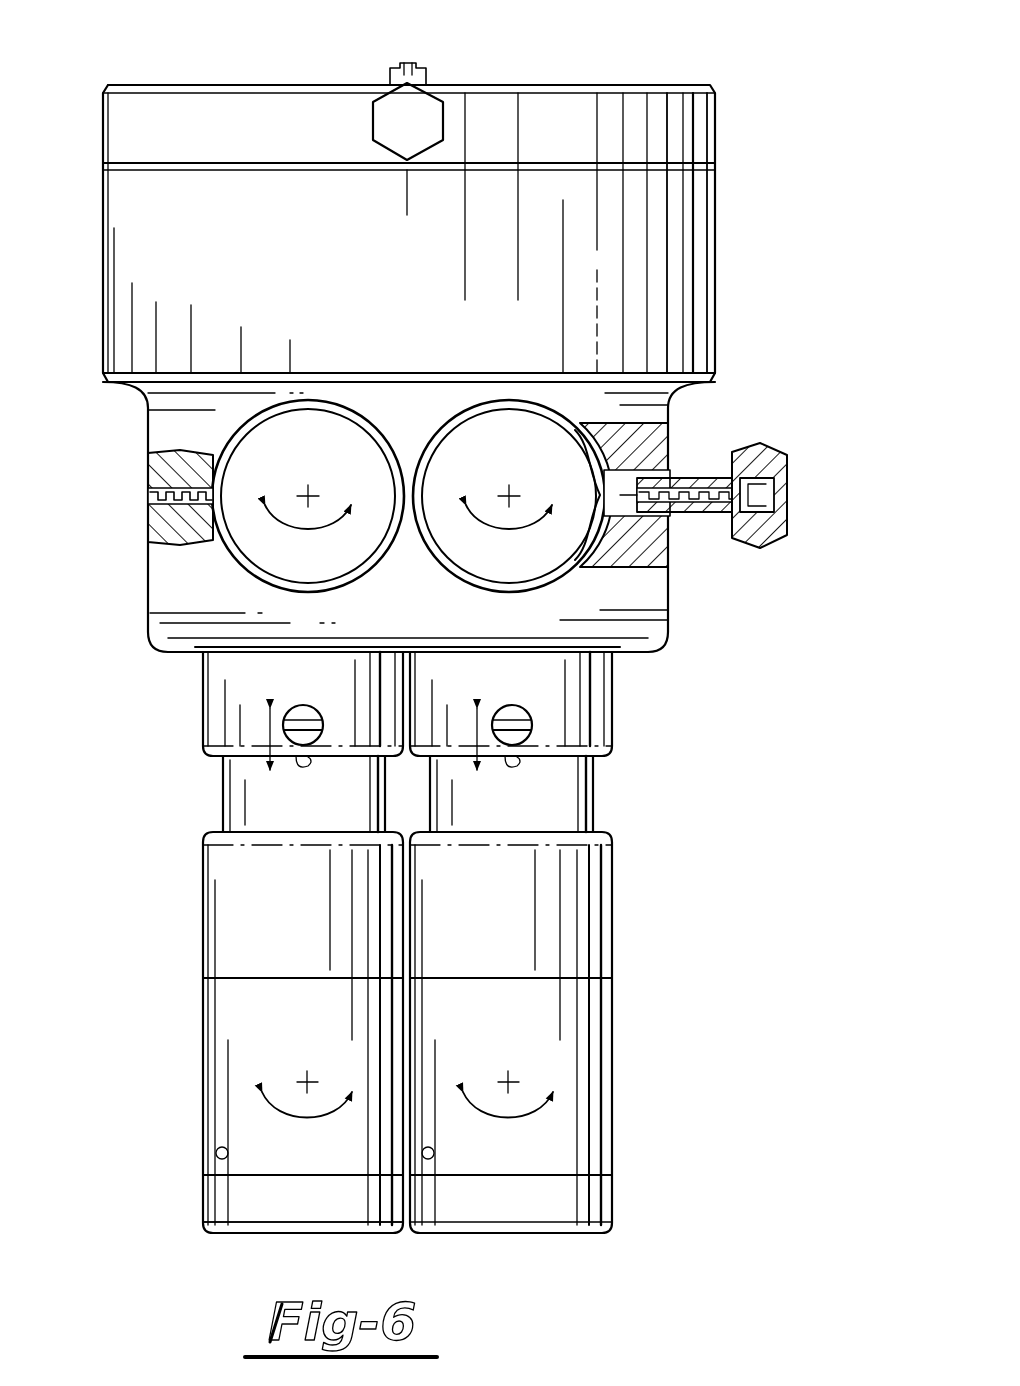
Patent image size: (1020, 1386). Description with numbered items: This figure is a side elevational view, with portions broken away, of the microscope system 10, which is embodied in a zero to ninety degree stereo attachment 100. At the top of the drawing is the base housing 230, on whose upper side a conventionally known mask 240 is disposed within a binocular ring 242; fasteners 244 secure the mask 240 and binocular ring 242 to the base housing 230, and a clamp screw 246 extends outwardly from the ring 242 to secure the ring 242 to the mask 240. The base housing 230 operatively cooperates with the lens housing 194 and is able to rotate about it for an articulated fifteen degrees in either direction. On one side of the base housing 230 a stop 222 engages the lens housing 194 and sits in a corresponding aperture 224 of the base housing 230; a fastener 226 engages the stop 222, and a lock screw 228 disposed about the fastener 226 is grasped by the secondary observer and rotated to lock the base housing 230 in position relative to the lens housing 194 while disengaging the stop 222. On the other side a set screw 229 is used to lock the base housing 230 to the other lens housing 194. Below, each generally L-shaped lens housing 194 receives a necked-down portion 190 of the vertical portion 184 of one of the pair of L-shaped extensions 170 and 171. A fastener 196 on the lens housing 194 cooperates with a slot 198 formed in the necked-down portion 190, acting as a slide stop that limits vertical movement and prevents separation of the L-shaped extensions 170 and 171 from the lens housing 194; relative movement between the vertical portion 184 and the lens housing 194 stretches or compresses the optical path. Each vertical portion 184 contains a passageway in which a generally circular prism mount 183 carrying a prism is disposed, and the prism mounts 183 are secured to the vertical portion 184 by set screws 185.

The microscope system 10 is at (720, 72).
The stereo attachment 100 is at (668, 645).
The L-shaped extension 170 is at (200, 968).
The L-shaped extension 171 is at (615, 1052).
The prism mount 183 is at (302, 1210).
The vertical portion 184 is at (220, 867).
The set screw 185 is at (228, 1152).
The necked-down portion 190 is at (222, 788).
The lens housing 194 is at (212, 690).
The fastener 196 is at (310, 716).
The slot 198 is at (306, 768).
The stop 222 is at (660, 445).
The aperture 224 is at (680, 548).
The fastener 226 is at (772, 500).
The lock screw 228 is at (760, 462).
The set screw 229 is at (148, 500).
The base housing 230 is at (702, 232).
The mask 240 is at (216, 85).
The binocular ring 242 is at (700, 135).
The fastener 244 is at (424, 72).
The clamp screw 246 is at (438, 120).